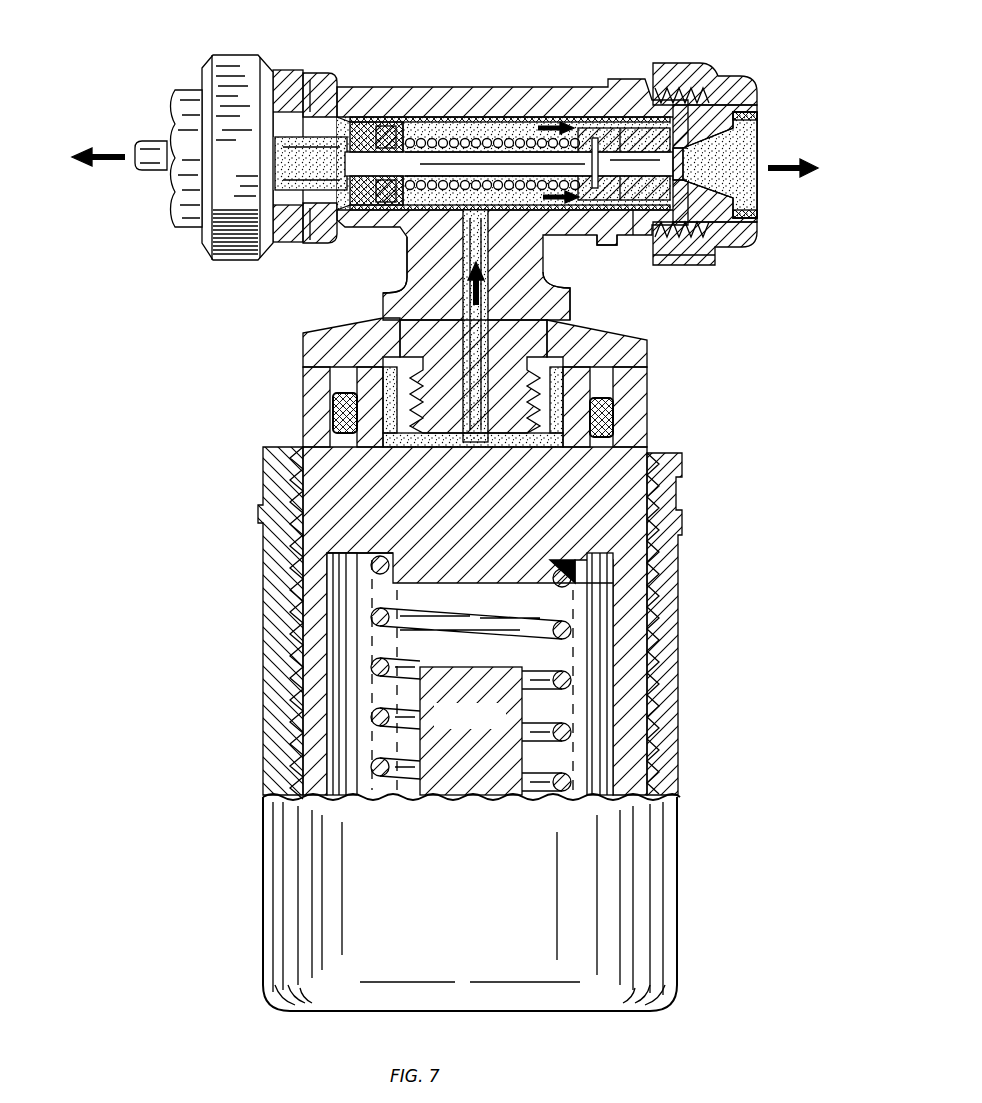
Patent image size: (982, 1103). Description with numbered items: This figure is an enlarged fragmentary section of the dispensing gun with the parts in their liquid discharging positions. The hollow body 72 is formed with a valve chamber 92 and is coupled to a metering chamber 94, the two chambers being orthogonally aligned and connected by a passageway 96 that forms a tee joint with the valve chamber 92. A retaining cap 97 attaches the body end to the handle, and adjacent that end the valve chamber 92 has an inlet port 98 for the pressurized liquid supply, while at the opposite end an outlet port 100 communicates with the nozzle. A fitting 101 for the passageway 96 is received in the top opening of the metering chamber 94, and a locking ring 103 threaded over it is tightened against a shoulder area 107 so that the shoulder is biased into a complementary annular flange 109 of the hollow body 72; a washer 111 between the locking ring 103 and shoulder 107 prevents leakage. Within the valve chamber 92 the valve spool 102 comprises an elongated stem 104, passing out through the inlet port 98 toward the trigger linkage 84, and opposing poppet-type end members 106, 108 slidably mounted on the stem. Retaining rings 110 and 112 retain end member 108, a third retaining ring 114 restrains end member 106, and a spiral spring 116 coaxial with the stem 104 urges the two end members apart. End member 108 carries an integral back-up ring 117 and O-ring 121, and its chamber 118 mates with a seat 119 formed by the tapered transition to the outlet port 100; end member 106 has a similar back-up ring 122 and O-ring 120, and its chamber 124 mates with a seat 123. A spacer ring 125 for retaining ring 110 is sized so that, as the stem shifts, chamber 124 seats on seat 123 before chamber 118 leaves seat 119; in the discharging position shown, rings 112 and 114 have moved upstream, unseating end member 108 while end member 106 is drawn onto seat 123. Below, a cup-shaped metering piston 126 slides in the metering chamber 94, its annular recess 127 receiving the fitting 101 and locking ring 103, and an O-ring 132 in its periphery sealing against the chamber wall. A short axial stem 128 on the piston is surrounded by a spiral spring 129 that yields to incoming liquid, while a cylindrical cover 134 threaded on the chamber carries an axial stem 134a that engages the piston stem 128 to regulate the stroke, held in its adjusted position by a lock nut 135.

The hollow body 72 is at (507, 89).
The linkage 84 is at (697, 62).
The valve chamber 92 is at (440, 115).
The metering chamber 94 is at (340, 606).
The passageway 96 is at (488, 260).
The retaining cap 97 is at (203, 243).
The inlet port 98 is at (308, 112).
The outlet port 100 is at (752, 232).
The fitting 101 is at (505, 405).
The valve spool 102 is at (440, 140).
The locking ring 103 is at (395, 392).
The stem 104 is at (147, 140).
The end member 106 is at (383, 122).
The shoulder area 107 is at (347, 325).
The end member 108 is at (690, 112).
The annular flange 109 is at (385, 291).
The retaining ring 110 is at (605, 128).
The washer 111 is at (548, 360).
The retaining ring 112 is at (712, 153).
The retaining ring 114 is at (328, 230).
The spiral spring 116 is at (513, 132).
The back-up ring 117 is at (628, 128).
The chamber 118 is at (695, 130).
The seat 119 is at (703, 260).
The O-ring 120 is at (412, 117).
The O-ring 121 is at (634, 232).
The back-up ring 122 is at (400, 125).
The seat 123 is at (360, 229).
The chamber 124 is at (363, 115).
The spacer ring 125 is at (601, 240).
The metering piston 126 is at (603, 457).
The annular recess 127 is at (490, 452).
The axial stem 128 is at (563, 590).
The spiral spring 129 is at (563, 637).
The O-ring 132 is at (331, 416).
The cylindrical cover 134 is at (492, 897).
The axial stem 134a is at (471, 731).
The lock nut 135 is at (262, 457).